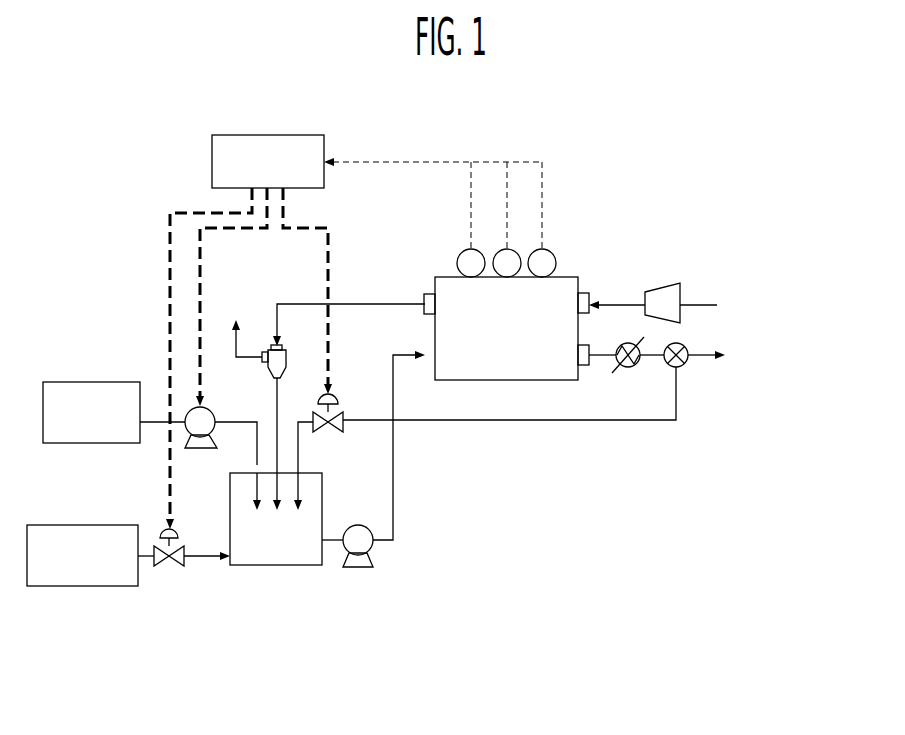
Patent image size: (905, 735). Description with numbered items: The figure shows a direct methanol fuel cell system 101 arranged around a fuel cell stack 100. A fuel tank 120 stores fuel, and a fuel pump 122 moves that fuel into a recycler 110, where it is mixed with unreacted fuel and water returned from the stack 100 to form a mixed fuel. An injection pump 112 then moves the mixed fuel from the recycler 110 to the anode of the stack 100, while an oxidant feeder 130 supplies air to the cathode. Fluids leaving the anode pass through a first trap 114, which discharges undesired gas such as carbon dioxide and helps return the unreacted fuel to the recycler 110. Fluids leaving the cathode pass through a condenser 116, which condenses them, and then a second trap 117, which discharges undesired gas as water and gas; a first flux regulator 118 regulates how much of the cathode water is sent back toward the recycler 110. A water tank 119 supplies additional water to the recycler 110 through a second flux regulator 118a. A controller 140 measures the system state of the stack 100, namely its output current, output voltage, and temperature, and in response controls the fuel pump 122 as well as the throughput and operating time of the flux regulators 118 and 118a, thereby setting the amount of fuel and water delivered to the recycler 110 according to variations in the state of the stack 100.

The fuel cell stack 100 is at (580, 277).
The direct methanol fuel cell system 101 is at (582, 570).
The recycler 110 is at (277, 565).
The injection pump 112 is at (358, 567).
The first trap 114 is at (287, 357).
The condenser 116 is at (637, 367).
The second trap 117 is at (686, 364).
The first flux regulator 118 is at (340, 432).
The second flux regulator 118a is at (170, 566).
The water tank 119 is at (83, 586).
The fuel tank 120 is at (100, 443).
The fuel pump 122 is at (200, 450).
The oxidant feeder 130 is at (680, 285).
The controller 140 is at (318, 135).